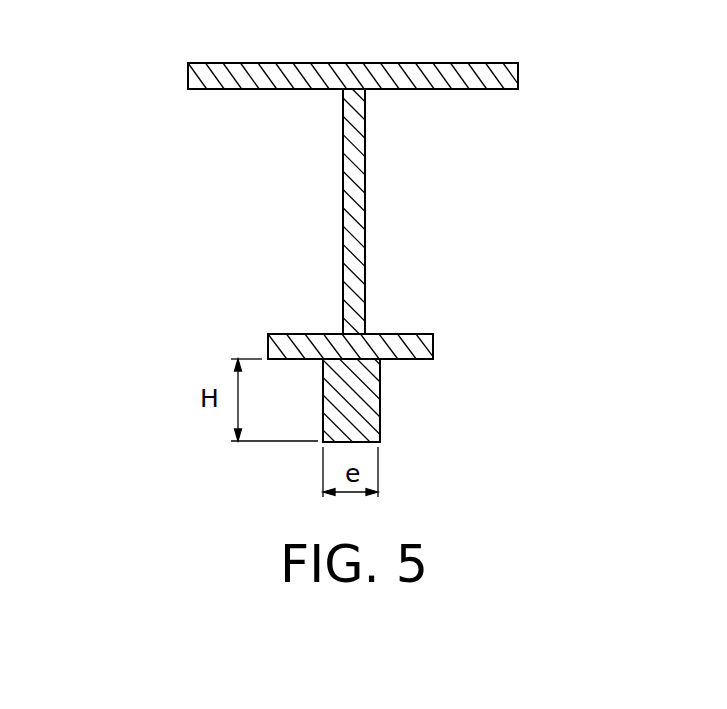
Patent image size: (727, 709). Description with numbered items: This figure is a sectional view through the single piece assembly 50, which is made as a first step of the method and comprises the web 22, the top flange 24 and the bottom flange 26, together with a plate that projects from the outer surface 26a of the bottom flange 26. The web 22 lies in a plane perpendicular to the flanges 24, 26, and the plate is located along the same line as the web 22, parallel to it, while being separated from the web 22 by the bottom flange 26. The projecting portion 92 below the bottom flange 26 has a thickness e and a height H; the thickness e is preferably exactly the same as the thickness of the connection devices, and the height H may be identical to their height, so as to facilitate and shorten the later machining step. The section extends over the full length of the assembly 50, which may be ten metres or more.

The single piece assembly 50 is at (112, 65).
The top flange 24 is at (500, 77).
The web 22 is at (352, 192).
The bottom flange 26 is at (422, 345).
The outer surface of the bottom flange 26a is at (407, 359).
The stem / rib projection 92 is at (375, 436).